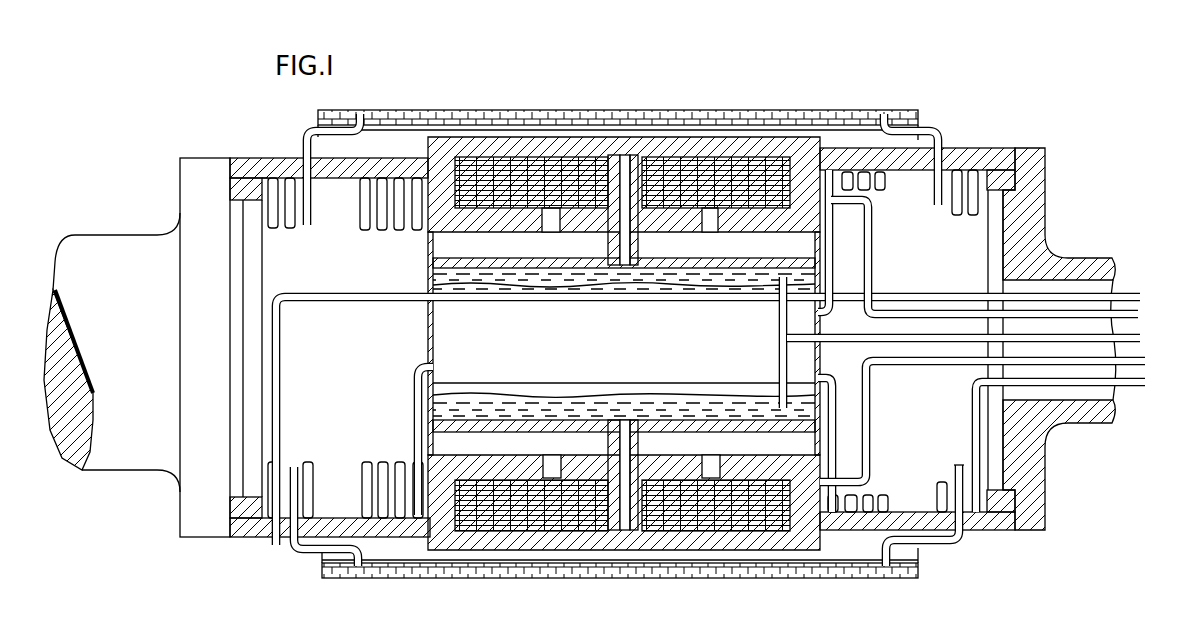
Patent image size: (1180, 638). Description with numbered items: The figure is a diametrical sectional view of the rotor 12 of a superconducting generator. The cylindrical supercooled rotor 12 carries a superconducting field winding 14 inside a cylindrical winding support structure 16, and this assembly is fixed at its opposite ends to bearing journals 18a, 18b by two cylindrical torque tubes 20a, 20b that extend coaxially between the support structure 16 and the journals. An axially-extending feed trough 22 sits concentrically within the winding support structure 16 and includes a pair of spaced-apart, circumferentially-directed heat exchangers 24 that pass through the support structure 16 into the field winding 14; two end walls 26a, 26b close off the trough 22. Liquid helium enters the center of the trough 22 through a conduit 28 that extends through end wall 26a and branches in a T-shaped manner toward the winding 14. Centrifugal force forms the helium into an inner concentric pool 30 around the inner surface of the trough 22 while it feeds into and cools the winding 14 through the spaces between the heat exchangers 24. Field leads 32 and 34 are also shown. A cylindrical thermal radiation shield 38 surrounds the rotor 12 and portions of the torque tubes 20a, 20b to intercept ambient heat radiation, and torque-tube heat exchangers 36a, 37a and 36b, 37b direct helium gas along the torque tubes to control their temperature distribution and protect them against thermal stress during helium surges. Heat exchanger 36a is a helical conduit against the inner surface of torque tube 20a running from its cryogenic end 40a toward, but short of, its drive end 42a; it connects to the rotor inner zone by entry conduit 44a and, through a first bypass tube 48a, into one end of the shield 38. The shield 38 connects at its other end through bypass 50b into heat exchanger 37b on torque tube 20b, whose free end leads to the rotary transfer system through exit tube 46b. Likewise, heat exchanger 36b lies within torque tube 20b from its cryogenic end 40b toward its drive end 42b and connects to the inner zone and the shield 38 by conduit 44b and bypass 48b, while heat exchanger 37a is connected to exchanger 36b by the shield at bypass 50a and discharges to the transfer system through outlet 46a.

The rotor 12 is at (1052, 166).
The superconducting field winding 14 is at (728, 158).
The winding support structure 16 is at (786, 160).
The bearing journal 18a is at (1083, 270).
The bearing journal 18b is at (128, 240).
The torque tube 20a is at (980, 148).
The torque tube 20b is at (248, 155).
The feed trough 22 is at (515, 262).
The heat exchangers 24 is at (634, 158).
The end wall 26a is at (822, 365).
The end wall 26b is at (430, 338).
The conduit 28 is at (775, 328).
The pool 30 is at (572, 286).
The field lead 32 is at (872, 227).
The field lead 34 is at (876, 452).
The torque-tube heat exchanger 36a is at (957, 220).
The torque-tube heat exchanger 36b is at (366, 232).
The torque-tube heat exchanger 37a is at (958, 462).
The torque-tube heat exchanger 37b is at (258, 178).
The thermal radiation shield 38 is at (500, 110).
The cryogenic end 40a is at (851, 165).
The cryogenic end 40b is at (393, 540).
The drive end 42a is at (1000, 158).
The drive end 42b is at (250, 540).
The entry conduit 44a is at (838, 264).
The conduit 44b is at (423, 374).
The outlet 46a is at (1136, 388).
The exit tube 46b is at (280, 425).
The first bypass tube 48a is at (932, 130).
The bypass 48b is at (304, 145).
The bypass 50a is at (960, 545).
The bypass 50b is at (300, 555).